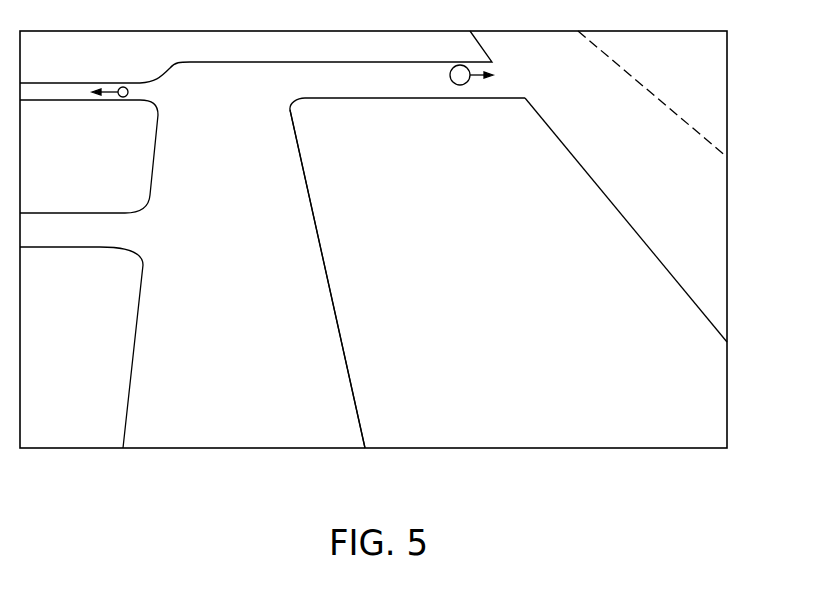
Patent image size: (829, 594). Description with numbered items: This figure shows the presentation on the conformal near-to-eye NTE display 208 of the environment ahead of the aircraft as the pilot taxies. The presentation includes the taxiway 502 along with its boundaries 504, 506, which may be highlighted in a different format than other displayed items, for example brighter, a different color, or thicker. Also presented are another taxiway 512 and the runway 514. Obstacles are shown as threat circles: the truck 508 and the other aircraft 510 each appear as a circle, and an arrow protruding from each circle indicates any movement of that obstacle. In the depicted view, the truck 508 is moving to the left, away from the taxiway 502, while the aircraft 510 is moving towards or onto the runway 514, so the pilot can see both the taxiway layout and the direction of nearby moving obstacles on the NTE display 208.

The NTE display 208 is at (727, 90).
The taxiway 502 is at (300, 186).
The boundary 504 is at (137, 322).
The boundary 506 is at (332, 292).
The truck 508 is at (128, 93).
The aircraft 510 is at (450, 75).
The taxiway 512 is at (77, 213).
The runway 514 is at (593, 153).